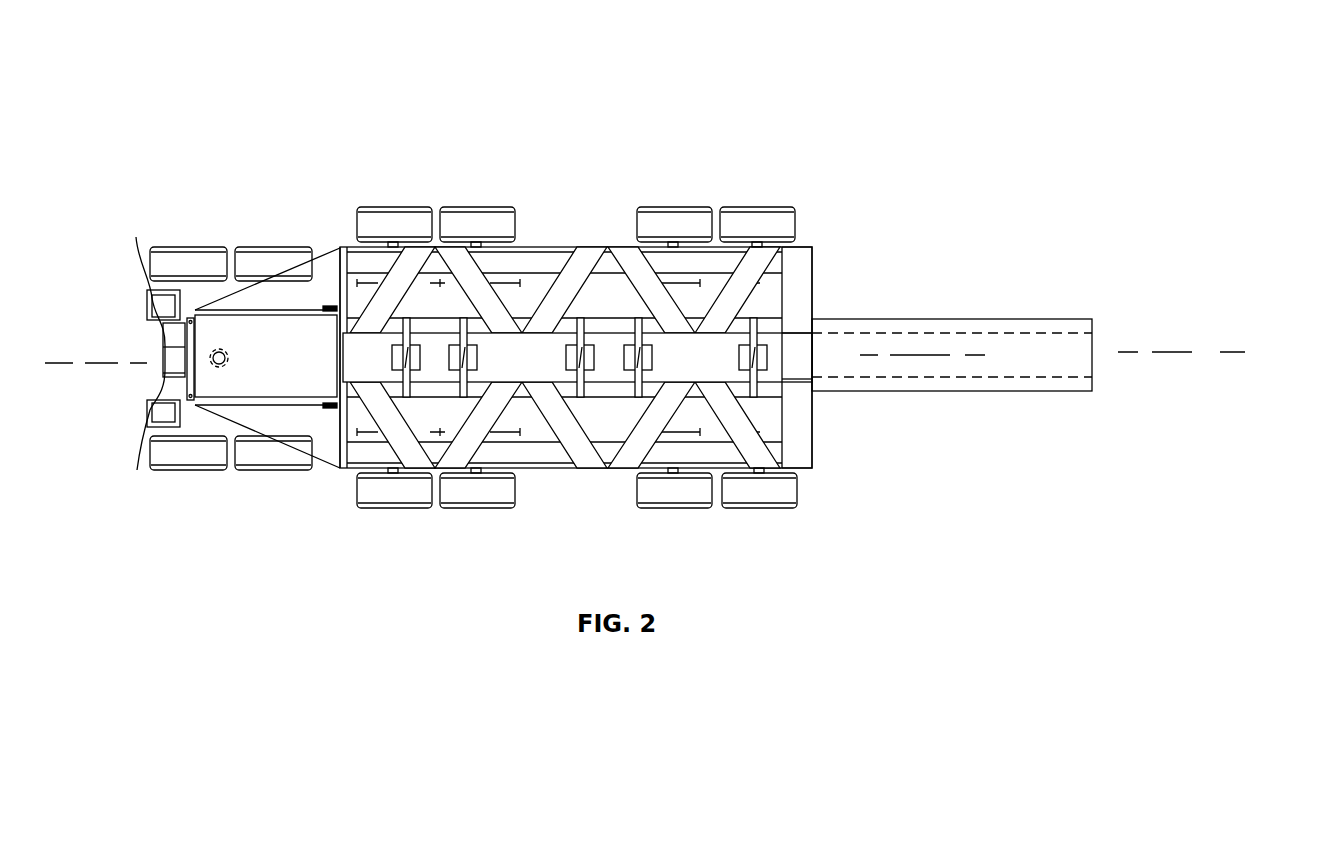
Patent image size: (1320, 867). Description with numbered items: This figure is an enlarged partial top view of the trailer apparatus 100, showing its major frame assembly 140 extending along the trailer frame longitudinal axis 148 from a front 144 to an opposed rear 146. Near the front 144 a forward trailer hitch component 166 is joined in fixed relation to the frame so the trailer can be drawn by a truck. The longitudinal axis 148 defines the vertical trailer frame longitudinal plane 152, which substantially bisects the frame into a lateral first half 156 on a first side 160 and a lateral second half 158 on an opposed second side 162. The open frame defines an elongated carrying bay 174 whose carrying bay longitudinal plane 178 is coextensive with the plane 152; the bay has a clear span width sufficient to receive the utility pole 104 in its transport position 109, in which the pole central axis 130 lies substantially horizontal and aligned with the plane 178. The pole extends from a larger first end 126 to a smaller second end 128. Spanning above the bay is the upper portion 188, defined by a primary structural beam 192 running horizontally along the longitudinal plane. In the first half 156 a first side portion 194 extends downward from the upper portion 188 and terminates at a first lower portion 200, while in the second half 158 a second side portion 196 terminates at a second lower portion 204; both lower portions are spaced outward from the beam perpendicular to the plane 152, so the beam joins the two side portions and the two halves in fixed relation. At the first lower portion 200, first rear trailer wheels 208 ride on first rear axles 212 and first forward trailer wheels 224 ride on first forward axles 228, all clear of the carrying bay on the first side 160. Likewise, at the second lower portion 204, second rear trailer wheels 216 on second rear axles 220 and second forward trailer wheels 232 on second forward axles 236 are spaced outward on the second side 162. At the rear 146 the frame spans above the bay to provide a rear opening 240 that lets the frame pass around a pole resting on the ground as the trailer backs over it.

The trailer apparatus 100 is at (624, 332).
The utility pole 104 is at (1002, 280).
The transport position 109 is at (788, 290).
The first end 126 is at (337, 469).
The second end 128 is at (1002, 280).
The pole central axis 130 is at (682, 402).
The major frame assembly 140 is at (576, 268).
The front 144 is at (334, 275).
The rear 146 is at (871, 319).
The trailer frame longitudinal axis 148 is at (682, 402).
The trailer frame longitudinal plane 152 is at (1167, 352).
The first half 156 is at (579, 484).
The second half 158 is at (631, 222).
The first side 160 is at (558, 492).
The second side 162 is at (624, 226).
The forward trailer hitch component 166 is at (212, 330).
The carrying bay 174 is at (539, 436).
The carrying bay longitudinal plane 178 is at (682, 402).
The upper portion 188 is at (654, 412).
The primary structural beam 192 is at (783, 360).
The first side portion 194 is at (655, 420).
The second side portion 196 is at (871, 319).
The first lower portion 200 is at (586, 482).
The second lower portion 204 is at (590, 250).
The first rear trailer wheel 208 is at (765, 480).
The first rear axle 212 is at (792, 533).
The second rear trailer wheel 216 is at (733, 220).
The second rear axle 220 is at (758, 241).
The first forward trailer wheel 224 is at (408, 550).
The first forward axle 228 is at (403, 480).
The second forward trailer wheel 232 is at (371, 162).
The second forward axle 236 is at (378, 224).
The rear opening 240 is at (1037, 327).